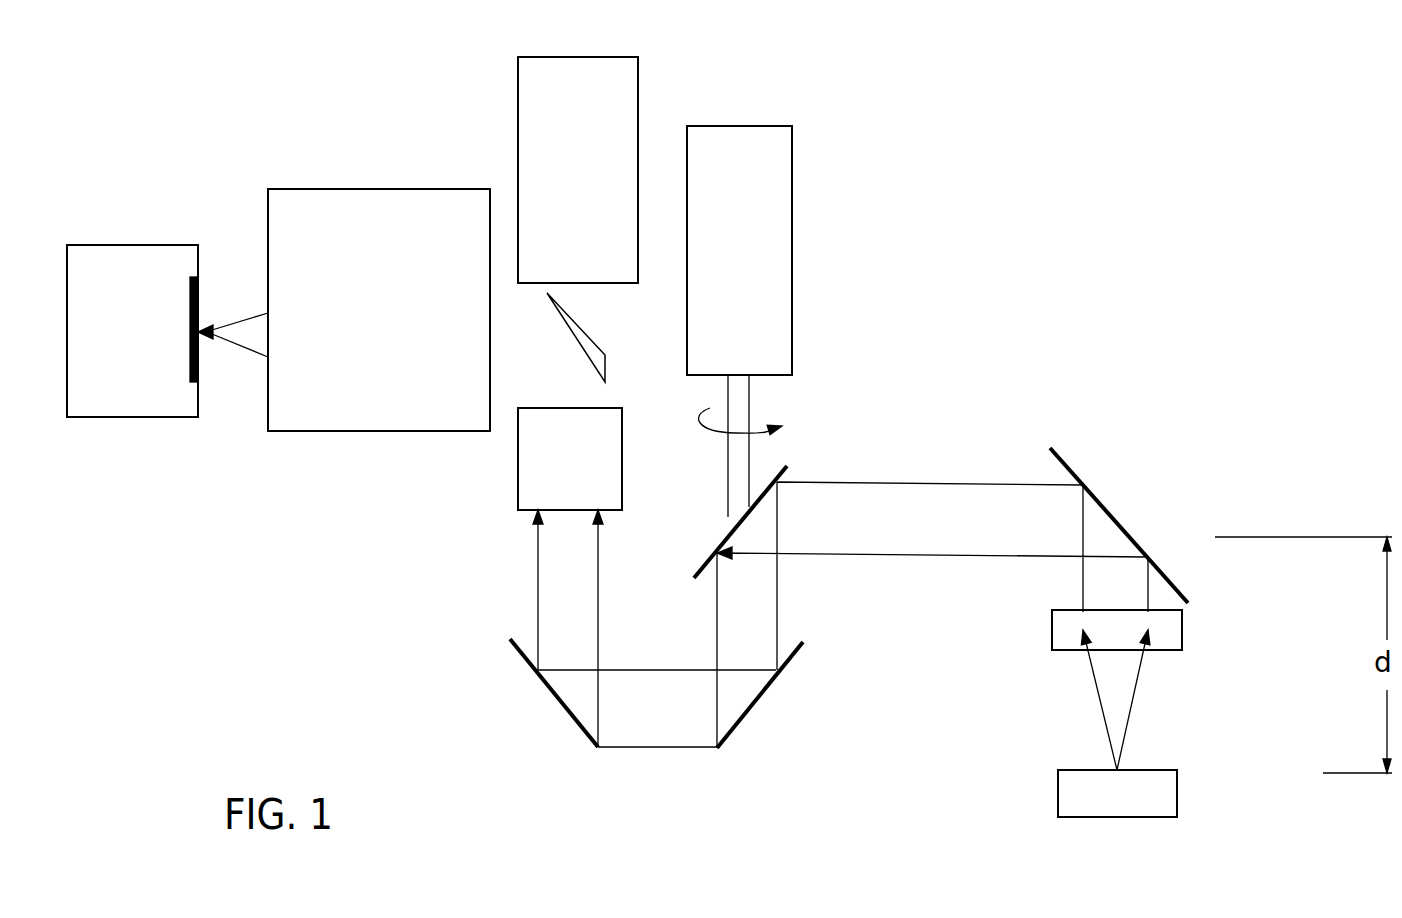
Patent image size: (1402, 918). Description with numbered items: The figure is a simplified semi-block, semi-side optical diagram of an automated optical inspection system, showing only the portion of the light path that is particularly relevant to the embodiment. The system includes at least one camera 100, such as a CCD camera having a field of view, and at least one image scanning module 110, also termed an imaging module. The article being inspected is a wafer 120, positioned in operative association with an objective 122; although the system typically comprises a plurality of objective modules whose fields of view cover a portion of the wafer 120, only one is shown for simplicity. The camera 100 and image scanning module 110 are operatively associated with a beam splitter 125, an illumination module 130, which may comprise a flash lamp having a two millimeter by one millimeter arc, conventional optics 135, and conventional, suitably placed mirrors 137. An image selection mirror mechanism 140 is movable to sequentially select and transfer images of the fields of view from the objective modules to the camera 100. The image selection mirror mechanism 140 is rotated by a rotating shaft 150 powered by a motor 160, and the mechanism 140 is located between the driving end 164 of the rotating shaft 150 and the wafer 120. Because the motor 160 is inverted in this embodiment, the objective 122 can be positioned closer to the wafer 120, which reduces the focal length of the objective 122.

The camera 100 is at (112, 417).
The image scanning module 110 is at (378, 408).
The wafer 120 is at (1177, 790).
The objective 122 is at (1052, 628).
The beam splitter 125 is at (578, 323).
The illumination module 130 is at (638, 80).
The optics 135 is at (542, 486).
The mirrors 137 is at (562, 708).
The image selection mirror mechanism 140 is at (787, 465).
The rotating shaft 150 is at (763, 403).
The motor 160 is at (792, 208).
The driving end 164 is at (737, 522).